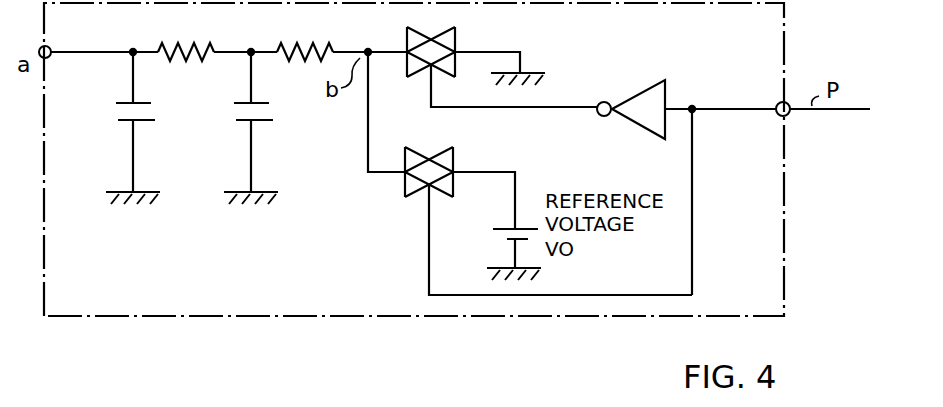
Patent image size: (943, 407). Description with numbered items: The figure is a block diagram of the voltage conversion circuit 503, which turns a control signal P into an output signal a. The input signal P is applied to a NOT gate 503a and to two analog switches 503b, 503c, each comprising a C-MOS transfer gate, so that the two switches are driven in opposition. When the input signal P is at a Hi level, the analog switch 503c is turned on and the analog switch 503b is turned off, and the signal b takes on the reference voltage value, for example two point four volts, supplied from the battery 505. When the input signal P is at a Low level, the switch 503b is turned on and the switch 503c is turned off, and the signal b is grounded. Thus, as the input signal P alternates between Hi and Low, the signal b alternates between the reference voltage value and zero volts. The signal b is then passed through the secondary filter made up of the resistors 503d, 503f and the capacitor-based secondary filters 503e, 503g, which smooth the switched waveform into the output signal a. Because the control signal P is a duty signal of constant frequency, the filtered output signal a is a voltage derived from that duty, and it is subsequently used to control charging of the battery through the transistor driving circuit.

The voltage conversion circuit 503 is at (786, 300).
The NOT gate 503a is at (642, 86).
The analog switch 503b is at (460, 50).
The analog switch 503c is at (455, 158).
The resistor 503d is at (296, 40).
The secondary filter 503e is at (266, 100).
The resistor 503f is at (178, 42).
The secondary filter 503g is at (148, 100).
The battery 505 is at (498, 236).